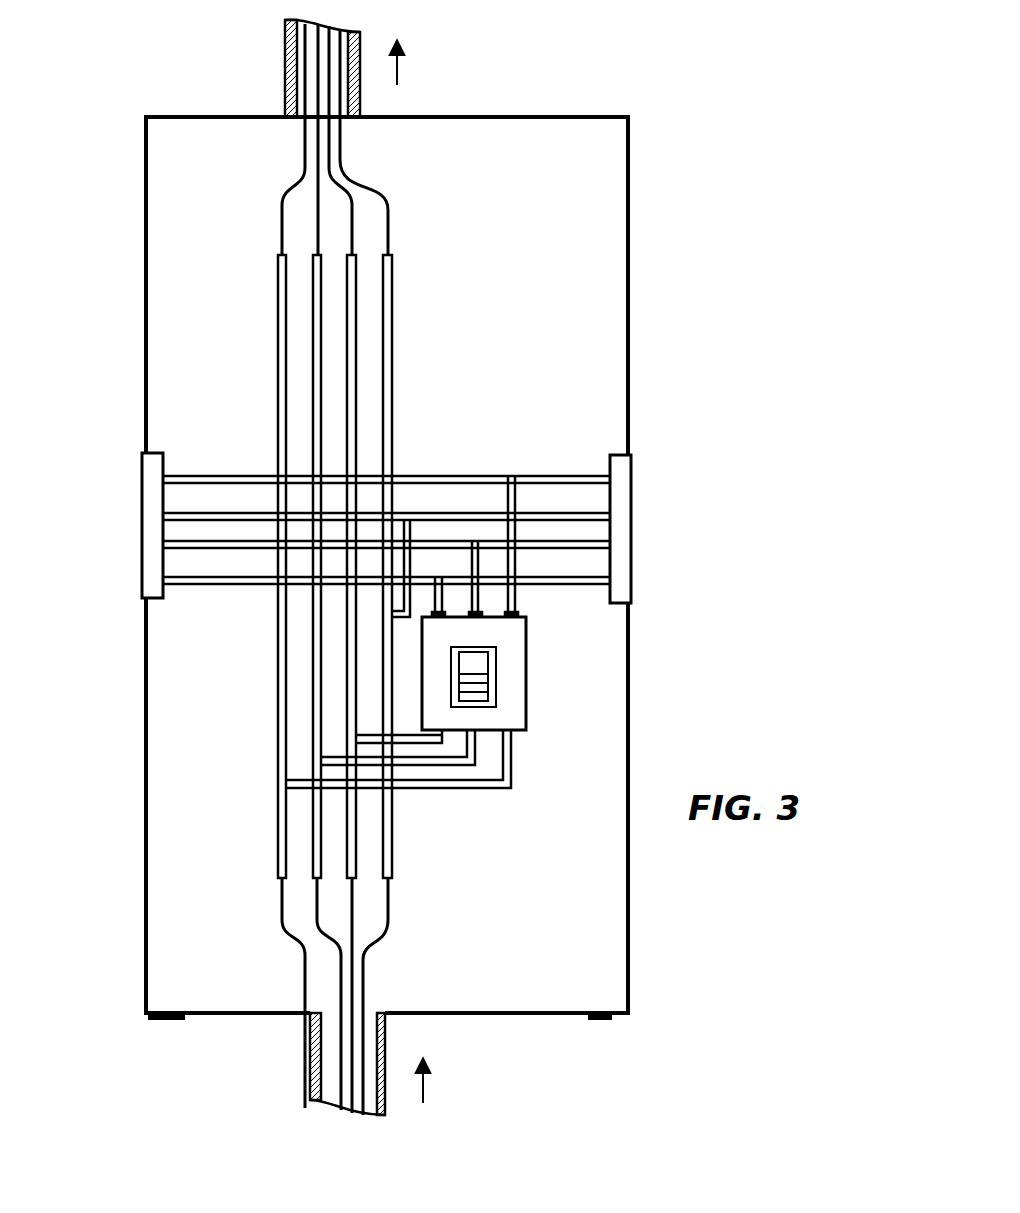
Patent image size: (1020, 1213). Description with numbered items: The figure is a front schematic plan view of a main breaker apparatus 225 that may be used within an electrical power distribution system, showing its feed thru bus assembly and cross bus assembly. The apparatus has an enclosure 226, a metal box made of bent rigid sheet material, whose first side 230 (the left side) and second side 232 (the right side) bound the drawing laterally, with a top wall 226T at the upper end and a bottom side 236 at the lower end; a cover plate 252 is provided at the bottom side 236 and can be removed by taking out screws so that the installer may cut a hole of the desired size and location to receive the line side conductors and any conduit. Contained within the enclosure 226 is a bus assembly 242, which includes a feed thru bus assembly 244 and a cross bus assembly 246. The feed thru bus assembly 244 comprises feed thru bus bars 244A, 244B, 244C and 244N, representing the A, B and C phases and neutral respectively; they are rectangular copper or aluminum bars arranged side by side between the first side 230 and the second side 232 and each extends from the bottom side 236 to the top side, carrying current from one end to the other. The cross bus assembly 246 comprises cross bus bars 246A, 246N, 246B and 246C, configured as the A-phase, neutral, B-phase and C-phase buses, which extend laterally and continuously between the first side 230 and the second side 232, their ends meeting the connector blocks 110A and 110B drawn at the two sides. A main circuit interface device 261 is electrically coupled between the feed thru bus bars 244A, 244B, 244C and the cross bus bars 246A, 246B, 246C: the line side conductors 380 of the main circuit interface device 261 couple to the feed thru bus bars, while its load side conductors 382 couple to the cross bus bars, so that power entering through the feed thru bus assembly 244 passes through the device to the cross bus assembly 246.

The main breaker apparatus 225 is at (570, 110).
The enclosure 226 is at (640, 240).
The top wall of housing 226T is at (244, 113).
The first side 230 is at (146, 305).
The second side 232 is at (631, 338).
The bottom side 236 is at (276, 1022).
The cover plate 252 is at (483, 1015).
The first connector port 110A is at (140, 518).
The second connector port 110B is at (633, 523).
The bus assembly 242 is at (250, 688).
The feed thru bus assembly 244 is at (394, 835).
The feed thru bus bar 244A is at (277, 292).
The feed thru bus bar 244B is at (313, 370).
The feed thru bus bar 244C is at (357, 378).
The feed thru bus bar 244N is at (393, 303).
The cross bus assembly 246 is at (488, 470).
The cross bus bar 246A is at (210, 476).
The cross bus bar 246B is at (198, 552).
The cross bus bar 246C is at (250, 588).
The cross bus bar 246N is at (250, 511).
The main circuit interface device 261 is at (528, 678).
The line side conductors 380 is at (442, 736).
The load side conductors 382 is at (443, 613).